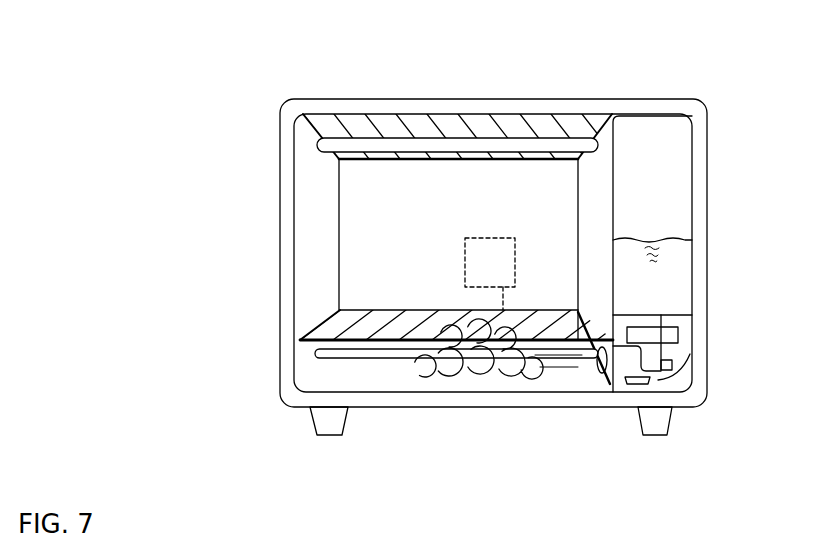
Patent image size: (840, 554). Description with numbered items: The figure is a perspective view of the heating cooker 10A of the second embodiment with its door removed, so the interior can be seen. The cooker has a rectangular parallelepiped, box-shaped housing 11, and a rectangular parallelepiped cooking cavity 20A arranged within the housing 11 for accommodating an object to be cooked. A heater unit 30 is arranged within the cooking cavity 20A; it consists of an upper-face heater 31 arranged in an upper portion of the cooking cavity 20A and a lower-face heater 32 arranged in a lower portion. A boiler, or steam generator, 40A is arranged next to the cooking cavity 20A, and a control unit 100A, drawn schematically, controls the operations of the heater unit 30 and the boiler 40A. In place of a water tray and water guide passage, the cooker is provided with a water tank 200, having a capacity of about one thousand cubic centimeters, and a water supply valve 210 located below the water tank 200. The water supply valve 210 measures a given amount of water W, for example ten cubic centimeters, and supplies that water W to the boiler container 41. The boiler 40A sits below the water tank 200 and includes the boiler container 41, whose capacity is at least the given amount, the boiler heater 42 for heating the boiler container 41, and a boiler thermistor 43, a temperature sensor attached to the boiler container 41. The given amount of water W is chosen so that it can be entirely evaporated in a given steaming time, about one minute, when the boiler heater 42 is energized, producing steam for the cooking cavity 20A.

The heating cooker 10A is at (523, 87).
The housing 11 is at (403, 99).
The cooking cavity 20A is at (550, 180).
The heater unit 30 is at (385, 259).
The upper-face heater 31 is at (370, 160).
The lower-face heater 32 is at (334, 349).
The control unit 100A is at (483, 352).
The water tank 200 is at (677, 193).
The water W is at (677, 279).
The water supply valve 210 is at (680, 334).
The boiler (steam generator) 40A is at (665, 351).
The boiler container 41 is at (658, 382).
The boiler heater 42 is at (635, 382).
The boiler thermistor (temperature sensor) 43 is at (665, 375).